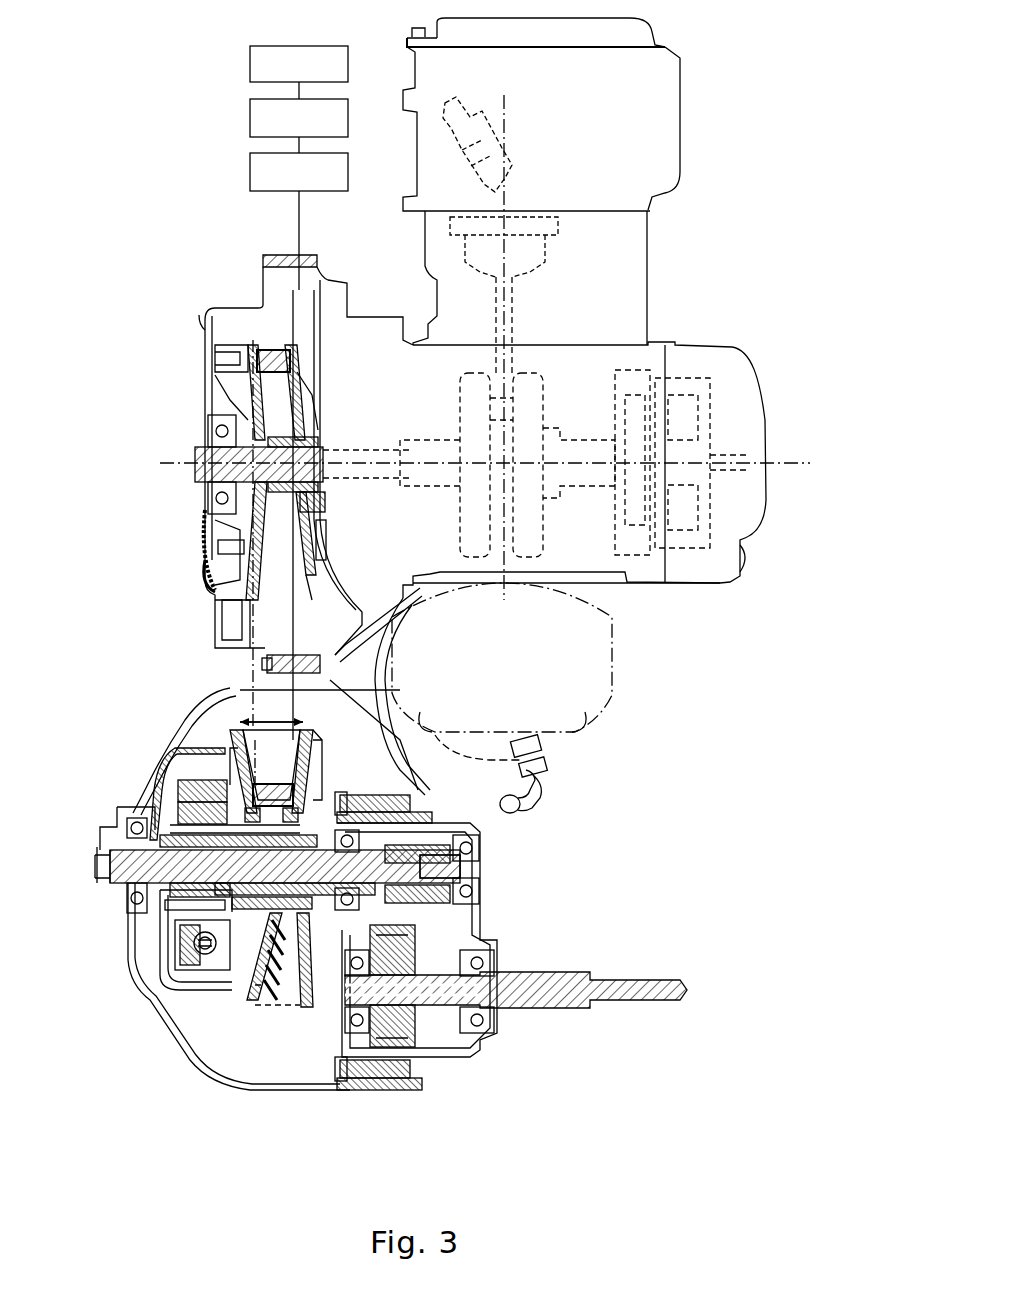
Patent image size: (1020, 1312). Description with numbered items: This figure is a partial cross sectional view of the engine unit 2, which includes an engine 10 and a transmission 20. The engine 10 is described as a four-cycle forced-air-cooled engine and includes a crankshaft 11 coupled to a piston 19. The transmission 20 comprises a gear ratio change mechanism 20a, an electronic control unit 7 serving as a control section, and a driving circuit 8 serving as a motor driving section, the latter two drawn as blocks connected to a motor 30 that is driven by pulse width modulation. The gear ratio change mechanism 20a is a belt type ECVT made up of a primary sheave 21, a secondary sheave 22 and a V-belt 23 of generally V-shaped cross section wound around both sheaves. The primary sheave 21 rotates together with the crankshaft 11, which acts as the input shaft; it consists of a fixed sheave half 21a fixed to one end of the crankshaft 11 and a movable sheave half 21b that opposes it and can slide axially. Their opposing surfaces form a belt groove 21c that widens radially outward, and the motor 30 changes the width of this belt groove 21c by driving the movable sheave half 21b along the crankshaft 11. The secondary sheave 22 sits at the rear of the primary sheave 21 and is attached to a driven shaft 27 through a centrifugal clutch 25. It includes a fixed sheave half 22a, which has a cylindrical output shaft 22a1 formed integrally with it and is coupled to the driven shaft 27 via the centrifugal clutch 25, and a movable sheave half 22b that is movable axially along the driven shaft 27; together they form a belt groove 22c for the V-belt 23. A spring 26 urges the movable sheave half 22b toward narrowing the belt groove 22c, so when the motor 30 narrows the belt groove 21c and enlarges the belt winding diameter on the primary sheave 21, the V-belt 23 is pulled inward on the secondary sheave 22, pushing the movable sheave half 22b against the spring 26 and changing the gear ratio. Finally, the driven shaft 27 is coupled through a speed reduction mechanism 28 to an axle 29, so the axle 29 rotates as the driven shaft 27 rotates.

The engine unit 2 is at (196, 228).
The electronic control unit (ECU) 7 is at (250, 61).
The driving circuit 8 is at (250, 113).
The motor 30 is at (250, 168).
The engine 10 is at (625, 297).
The crankshaft 11 is at (545, 542).
The piston 19 is at (556, 218).
The transmission 20 is at (196, 568).
The gear ratio change mechanism 20a is at (205, 585).
The primary sheave 21 is at (240, 342).
The fixed sheave half 21a is at (252, 484).
The movable sheave half 21b is at (310, 484).
The belt groove 21c is at (210, 533).
The secondary sheave 22 is at (260, 1060).
The fixed sheave half 22a is at (292, 1010).
The cylindrical output shaft 22a1 is at (167, 803).
The movable sheave half 22b is at (250, 1000).
The belt groove 22c is at (248, 1020).
The V-belt 23 is at (255, 667).
The centrifugal clutch 25 is at (172, 1000).
The spring 26 is at (245, 912).
The driven shaft 27 is at (108, 870).
The speed reduction mechanism 28 is at (490, 915).
The axle 29 is at (617, 975).